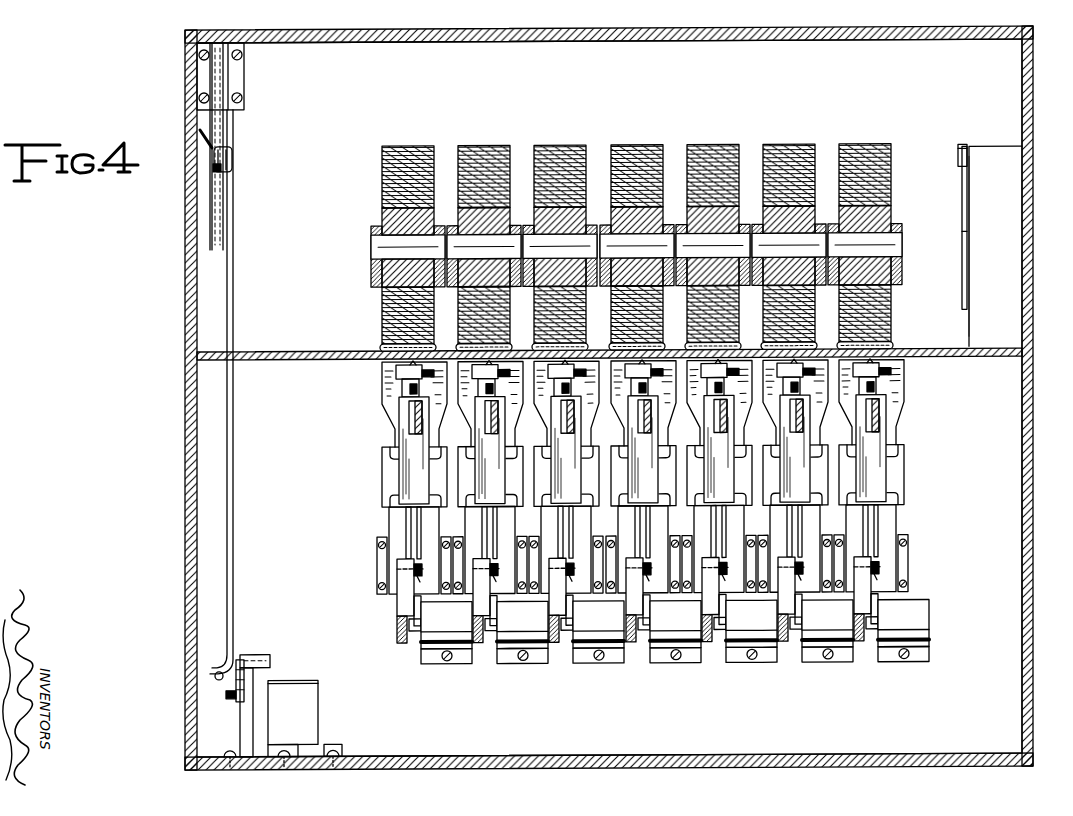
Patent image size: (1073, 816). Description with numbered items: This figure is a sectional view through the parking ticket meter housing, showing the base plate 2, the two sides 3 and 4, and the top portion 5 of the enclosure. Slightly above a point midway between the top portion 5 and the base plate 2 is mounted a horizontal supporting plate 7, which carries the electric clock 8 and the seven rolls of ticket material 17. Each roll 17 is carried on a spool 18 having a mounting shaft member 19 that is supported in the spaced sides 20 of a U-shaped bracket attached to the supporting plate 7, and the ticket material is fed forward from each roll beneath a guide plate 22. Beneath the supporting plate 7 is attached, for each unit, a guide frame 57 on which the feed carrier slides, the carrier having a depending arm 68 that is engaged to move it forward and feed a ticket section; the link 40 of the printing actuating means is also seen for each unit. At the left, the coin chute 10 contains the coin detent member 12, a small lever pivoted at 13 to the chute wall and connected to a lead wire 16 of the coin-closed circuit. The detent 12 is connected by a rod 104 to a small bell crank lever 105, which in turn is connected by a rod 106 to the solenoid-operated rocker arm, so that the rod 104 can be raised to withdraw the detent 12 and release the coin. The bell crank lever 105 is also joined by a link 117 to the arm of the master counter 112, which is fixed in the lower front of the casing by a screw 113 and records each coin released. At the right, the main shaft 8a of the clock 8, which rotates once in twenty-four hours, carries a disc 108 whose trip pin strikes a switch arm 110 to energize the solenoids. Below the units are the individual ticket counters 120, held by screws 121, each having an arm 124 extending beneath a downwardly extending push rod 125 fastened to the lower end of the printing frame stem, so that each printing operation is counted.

The bottom or base plate 2 is at (430, 757).
The side 3 is at (185, 455).
The side 4 is at (1033, 418).
The top portion 5 is at (666, 44).
The horizontal supporting plate 7 is at (312, 360).
The electric clock 8 is at (985, 160).
The main shaft of the clock 8a is at (967, 236).
The coin chute 10 is at (236, 135).
The coin detent member 12 is at (215, 172).
The pivot 13 is at (215, 152).
The lead wire 16 is at (205, 145).
The roll of ticket material 17 is at (434, 150).
The spool 18 is at (510, 228).
The mounting shaft member 19 is at (394, 243).
The spaced sides of the U-shaped bracket member 20 is at (371, 275).
The guide plate 22 is at (382, 349).
The link 40 is at (918, 604).
The guide frame 57 is at (409, 418).
The depending arm 68 is at (399, 463).
The rod 104 is at (233, 343).
The small bell crank lever 105 is at (236, 680).
The rod 106 is at (230, 699).
The disc 108 is at (962, 283).
The switch arm 110 is at (960, 150).
The master counter 112 is at (312, 700).
The screw 113 is at (336, 745).
The link 117 is at (244, 680).
The individual counter 120 is at (472, 660).
The screw 121 is at (449, 662).
The arm 124 is at (403, 645).
The push rod 125 is at (410, 622).